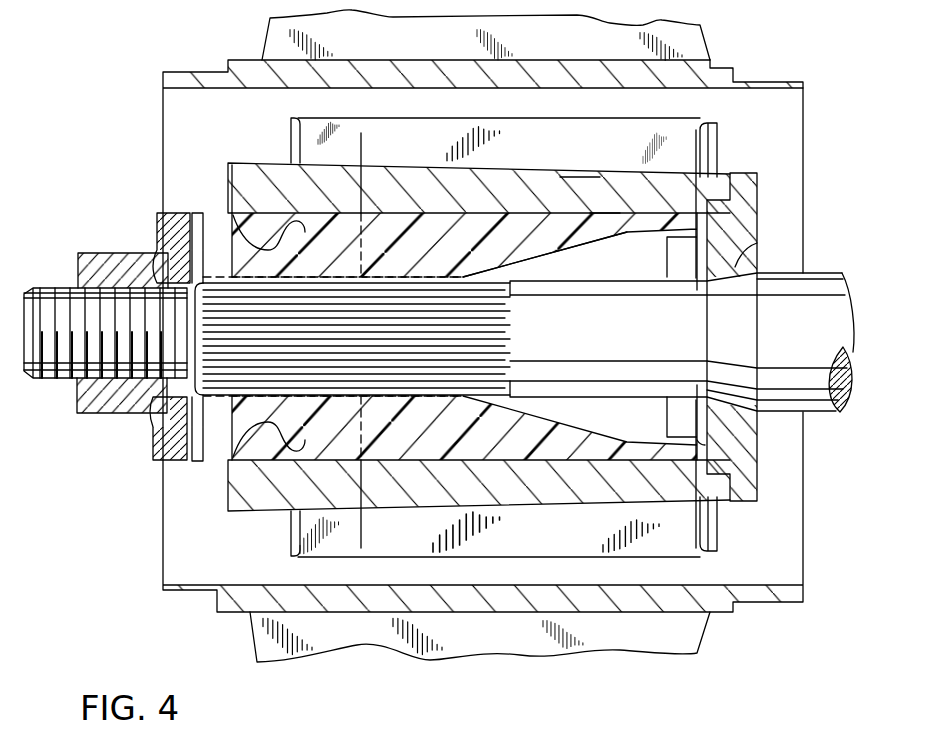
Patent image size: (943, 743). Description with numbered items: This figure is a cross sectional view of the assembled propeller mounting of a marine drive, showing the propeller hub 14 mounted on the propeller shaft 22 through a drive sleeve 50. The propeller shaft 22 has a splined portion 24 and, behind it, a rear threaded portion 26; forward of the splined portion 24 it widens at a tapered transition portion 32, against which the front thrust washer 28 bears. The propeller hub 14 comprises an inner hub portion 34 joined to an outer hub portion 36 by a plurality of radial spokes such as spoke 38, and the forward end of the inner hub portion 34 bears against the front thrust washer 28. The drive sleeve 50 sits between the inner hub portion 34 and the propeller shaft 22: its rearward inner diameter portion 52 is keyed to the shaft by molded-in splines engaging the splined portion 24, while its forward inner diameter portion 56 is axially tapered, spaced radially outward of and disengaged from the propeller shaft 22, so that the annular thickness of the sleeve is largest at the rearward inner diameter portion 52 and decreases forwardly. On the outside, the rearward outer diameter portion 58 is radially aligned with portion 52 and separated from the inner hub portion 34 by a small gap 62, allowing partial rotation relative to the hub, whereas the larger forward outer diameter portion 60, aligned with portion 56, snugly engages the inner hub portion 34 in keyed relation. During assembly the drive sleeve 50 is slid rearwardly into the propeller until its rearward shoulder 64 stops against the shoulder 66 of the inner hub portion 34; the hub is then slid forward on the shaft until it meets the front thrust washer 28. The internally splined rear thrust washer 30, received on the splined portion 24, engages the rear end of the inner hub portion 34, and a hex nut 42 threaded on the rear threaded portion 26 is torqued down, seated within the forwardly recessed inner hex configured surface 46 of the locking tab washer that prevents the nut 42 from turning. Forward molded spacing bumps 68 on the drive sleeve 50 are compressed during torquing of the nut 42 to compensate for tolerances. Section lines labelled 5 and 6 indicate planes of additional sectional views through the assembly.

The propeller hub 14 is at (248, 52).
The propeller shaft 22 is at (833, 327).
The splined portion 24 is at (382, 393).
The rear threaded portion 26 is at (57, 382).
The front thrust washer 28 is at (750, 198).
The rear thrust washer 30 is at (200, 226).
The tapered transition portion 32 is at (748, 255).
The inner hub portion 34 is at (567, 177).
The outer hub portion 36 is at (735, 78).
The radial spoke 38 is at (722, 134).
The nut 42 is at (100, 252).
The inner hex configured surface 46 is at (172, 459).
The drive sleeve 50 is at (447, 215).
The rearward inner diameter portion 52 is at (427, 278).
The forward inner diameter portion 56 is at (548, 256).
The rearward outer diameter portion 58 is at (347, 213).
The forward outer diameter portion 60 is at (598, 233).
The small gap 62 is at (288, 158).
The rearward shoulder 64 is at (268, 218).
The shoulder 66 is at (243, 224).
The forward molded spacing bumps 68 is at (702, 442).
The section line 5- 5 is at (735, 147).
The section line 6- 6 is at (405, 138).